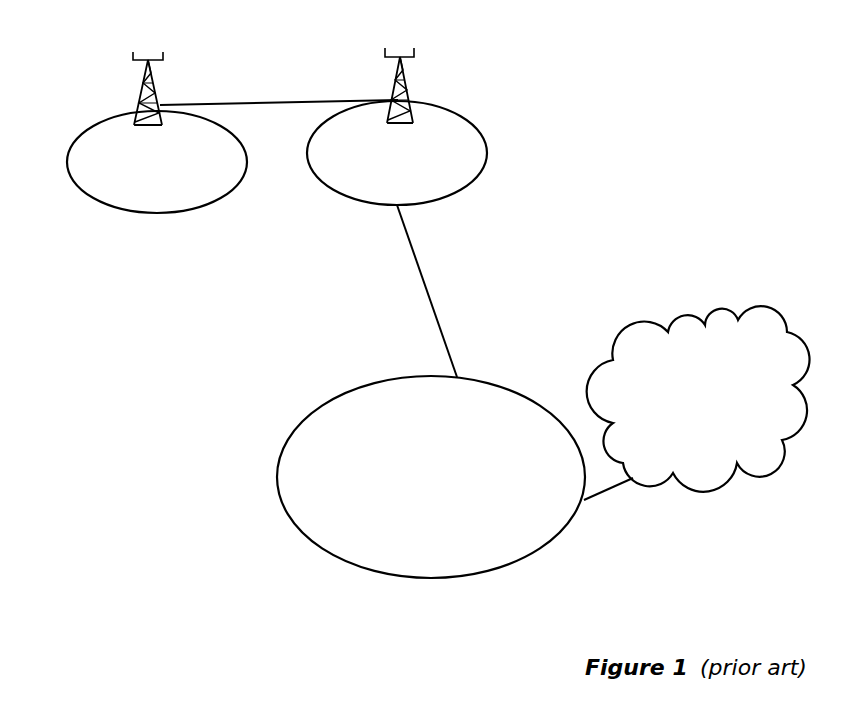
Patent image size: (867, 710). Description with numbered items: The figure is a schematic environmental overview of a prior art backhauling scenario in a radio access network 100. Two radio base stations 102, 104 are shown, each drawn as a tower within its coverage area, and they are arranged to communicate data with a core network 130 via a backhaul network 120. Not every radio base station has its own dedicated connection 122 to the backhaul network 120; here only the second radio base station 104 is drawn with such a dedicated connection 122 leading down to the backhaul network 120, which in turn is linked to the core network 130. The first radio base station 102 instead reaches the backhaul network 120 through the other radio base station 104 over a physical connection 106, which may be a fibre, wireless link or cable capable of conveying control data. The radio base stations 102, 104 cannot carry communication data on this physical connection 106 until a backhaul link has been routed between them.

The radio access network 100 is at (118, 294).
The radio base station 102 is at (130, 90).
The radio base station 104 is at (412, 63).
The physical connection 106 is at (270, 102).
The backhaul network 120 is at (285, 512).
The dedicated connection 122 is at (430, 292).
The core network 130 is at (666, 312).